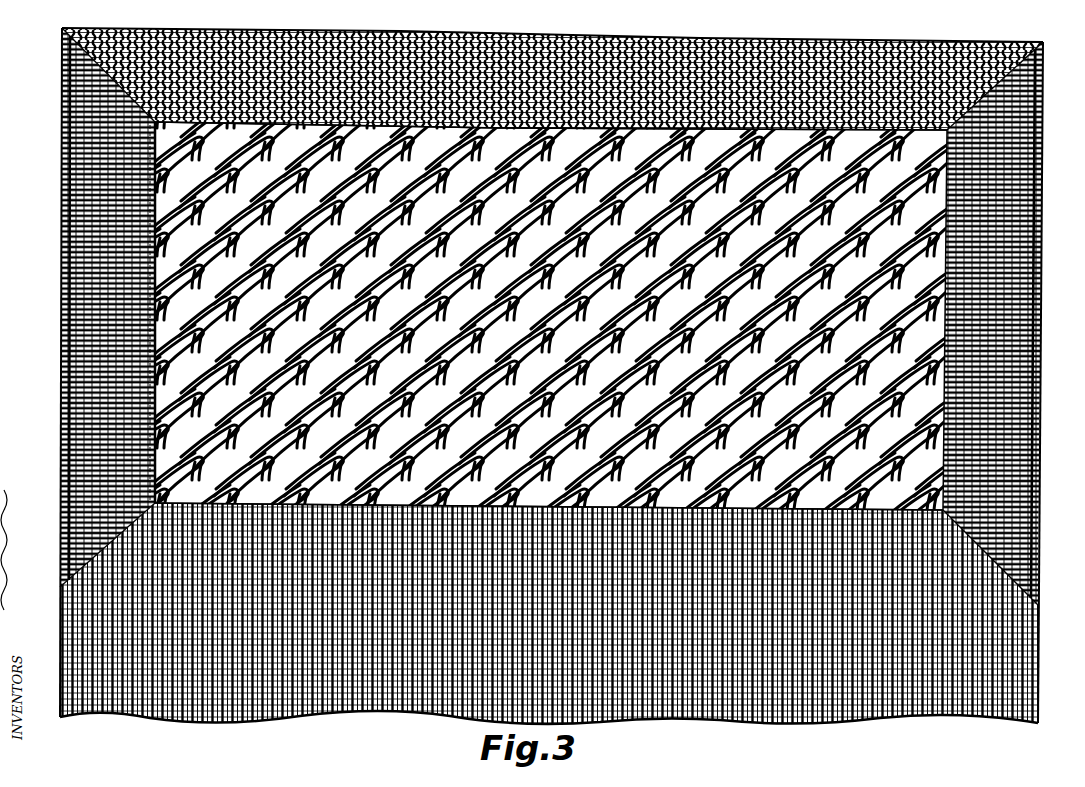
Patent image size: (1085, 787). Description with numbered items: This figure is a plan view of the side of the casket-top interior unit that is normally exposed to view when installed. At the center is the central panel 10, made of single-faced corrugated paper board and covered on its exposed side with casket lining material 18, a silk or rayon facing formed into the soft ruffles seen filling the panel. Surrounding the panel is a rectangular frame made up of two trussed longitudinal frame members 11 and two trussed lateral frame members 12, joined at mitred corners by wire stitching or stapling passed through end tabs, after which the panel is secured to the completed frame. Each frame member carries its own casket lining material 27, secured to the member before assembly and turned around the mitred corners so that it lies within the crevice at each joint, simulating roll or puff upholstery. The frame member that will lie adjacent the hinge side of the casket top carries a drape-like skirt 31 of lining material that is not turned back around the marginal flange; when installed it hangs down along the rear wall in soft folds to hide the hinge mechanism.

The central panel 10 is at (205, 301).
The longitudinal frame member 11 is at (601, 52).
The lateral frame member 12 is at (60, 244).
The casket lining material 18 is at (150, 360).
The casket lining material 27 is at (450, 47).
The drape-like skirt 31 is at (791, 704).